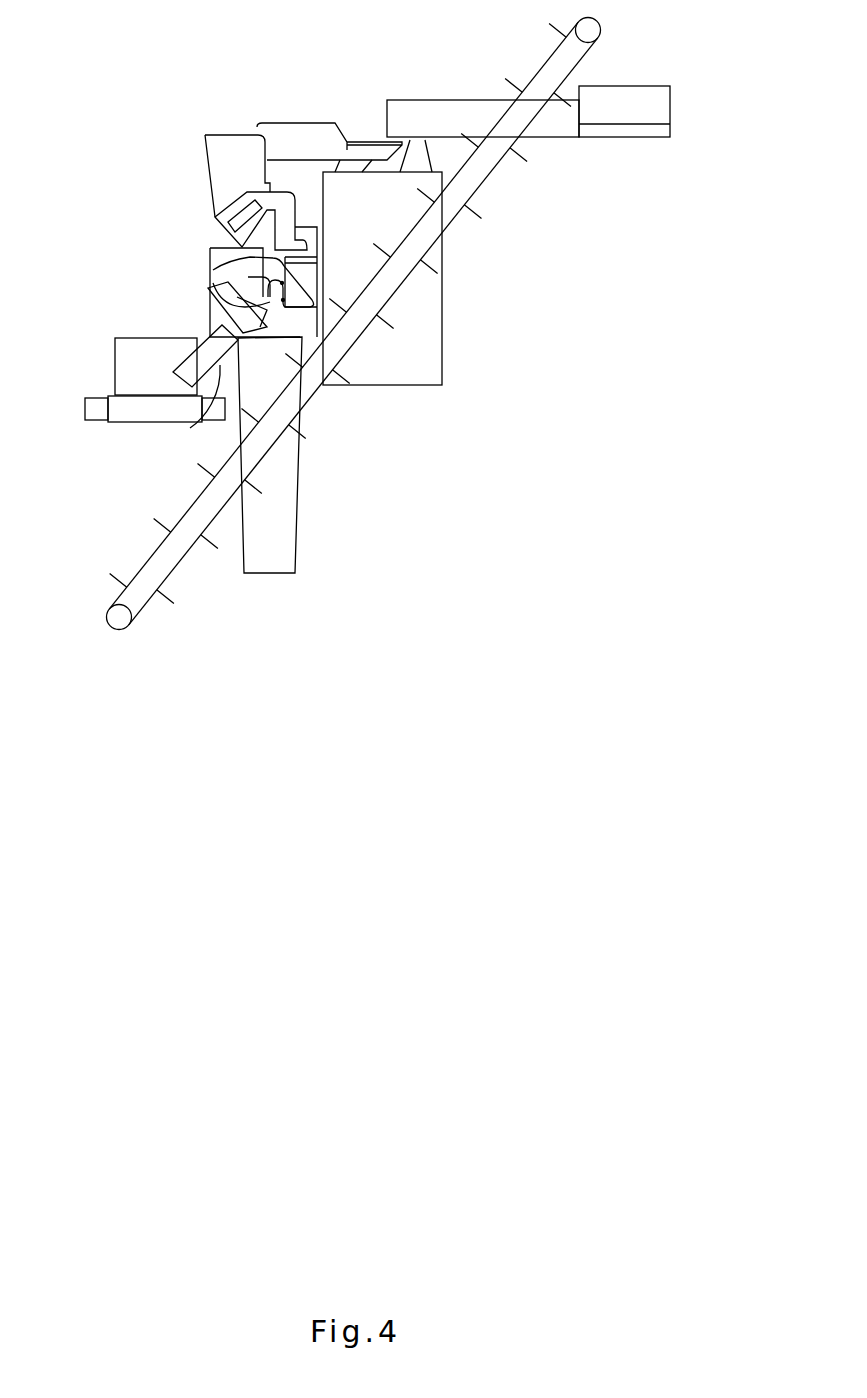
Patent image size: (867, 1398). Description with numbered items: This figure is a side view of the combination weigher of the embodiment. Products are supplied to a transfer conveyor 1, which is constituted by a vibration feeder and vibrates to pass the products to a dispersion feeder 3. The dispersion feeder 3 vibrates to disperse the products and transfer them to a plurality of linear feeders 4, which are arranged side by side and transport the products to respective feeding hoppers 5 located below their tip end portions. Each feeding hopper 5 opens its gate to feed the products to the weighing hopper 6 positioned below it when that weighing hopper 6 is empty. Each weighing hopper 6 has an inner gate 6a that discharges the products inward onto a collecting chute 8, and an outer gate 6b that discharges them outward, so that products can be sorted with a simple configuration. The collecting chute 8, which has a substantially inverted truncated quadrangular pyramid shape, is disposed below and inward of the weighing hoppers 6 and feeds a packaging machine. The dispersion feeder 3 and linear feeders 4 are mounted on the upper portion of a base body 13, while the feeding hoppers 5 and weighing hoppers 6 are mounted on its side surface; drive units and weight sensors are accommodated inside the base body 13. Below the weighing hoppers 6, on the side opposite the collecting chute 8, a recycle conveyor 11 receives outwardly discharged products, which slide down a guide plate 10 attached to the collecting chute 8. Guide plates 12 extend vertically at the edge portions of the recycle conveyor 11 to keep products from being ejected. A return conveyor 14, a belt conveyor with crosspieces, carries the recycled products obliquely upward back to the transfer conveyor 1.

The transfer conveyor 1 is at (635, 86).
The dispersion feeder 3 is at (456, 100).
The linear feeder 4 is at (300, 122).
The feeding hopper 5 is at (205, 153).
The weighing hopper 6 is at (208, 263).
The inner gate 6a is at (217, 302).
The outer gate 6b is at (223, 317).
The collecting chute 8 is at (298, 497).
The guide plate 10 is at (190, 428).
The recycle conveyor 11 is at (126, 422).
The guide plate 12 is at (113, 360).
The base body 13 is at (442, 340).
The return conveyor 14 is at (460, 212).